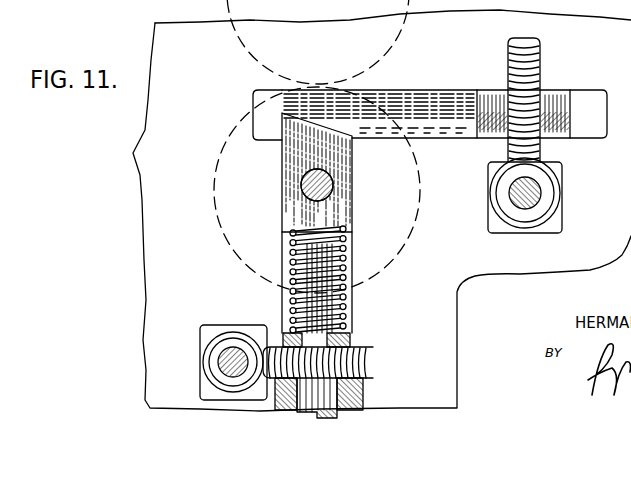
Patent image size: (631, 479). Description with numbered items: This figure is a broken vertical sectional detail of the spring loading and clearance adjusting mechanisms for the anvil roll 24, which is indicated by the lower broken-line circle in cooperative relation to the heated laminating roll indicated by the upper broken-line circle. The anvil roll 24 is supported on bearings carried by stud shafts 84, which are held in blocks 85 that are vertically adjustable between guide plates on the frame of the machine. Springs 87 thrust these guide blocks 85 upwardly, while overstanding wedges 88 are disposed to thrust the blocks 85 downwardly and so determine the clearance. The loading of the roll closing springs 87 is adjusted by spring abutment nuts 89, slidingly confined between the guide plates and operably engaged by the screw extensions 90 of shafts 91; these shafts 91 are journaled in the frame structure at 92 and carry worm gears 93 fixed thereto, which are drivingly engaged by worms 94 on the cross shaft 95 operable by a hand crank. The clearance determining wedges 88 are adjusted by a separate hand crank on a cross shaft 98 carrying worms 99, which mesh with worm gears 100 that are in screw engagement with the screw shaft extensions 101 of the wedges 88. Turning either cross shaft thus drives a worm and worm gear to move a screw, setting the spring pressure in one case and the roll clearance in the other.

The anvil roll 24 is at (258, 64).
The stud shafts 84 is at (320, 165).
The blocks 85 is at (300, 204).
The springs 87 is at (352, 284).
The wedges 88 is at (413, 104).
The spring abutment nuts 89 is at (350, 342).
The screw extensions 90 is at (304, 265).
The shafts 91 is at (363, 389).
The frame journal 92 is at (350, 404).
The worm gears 93 is at (373, 362).
The worms 94 is at (214, 360).
The cross shaft 95 is at (228, 353).
The cross shaft 98 is at (510, 197).
The worms 99 is at (545, 185).
The worm gears 100 is at (530, 60).
The screw shaft extensions 101 is at (490, 132).